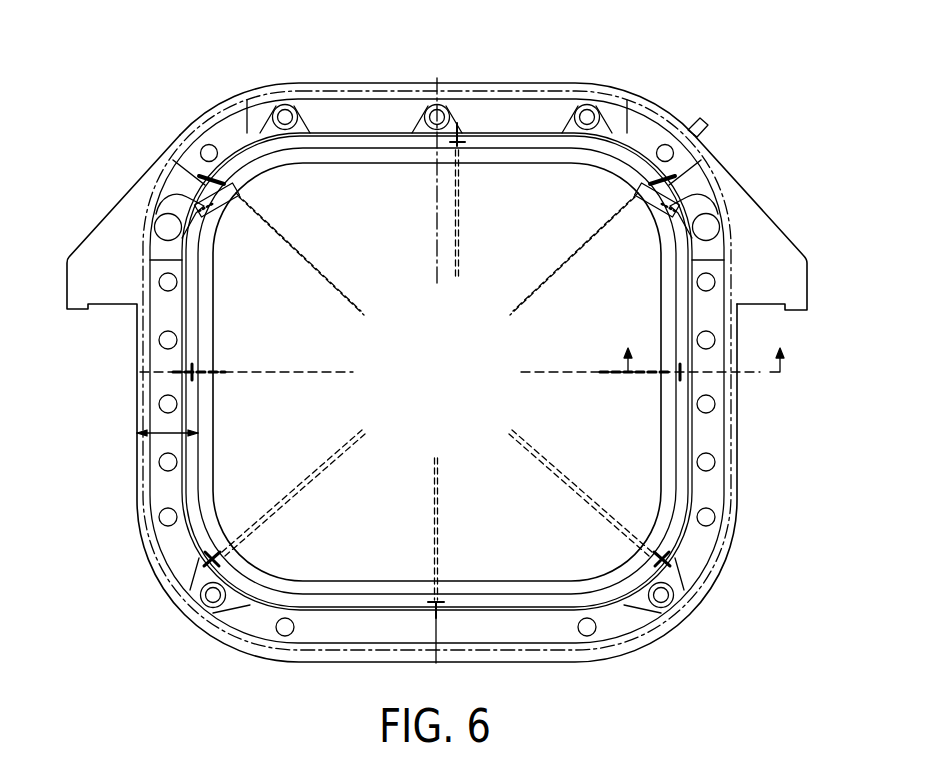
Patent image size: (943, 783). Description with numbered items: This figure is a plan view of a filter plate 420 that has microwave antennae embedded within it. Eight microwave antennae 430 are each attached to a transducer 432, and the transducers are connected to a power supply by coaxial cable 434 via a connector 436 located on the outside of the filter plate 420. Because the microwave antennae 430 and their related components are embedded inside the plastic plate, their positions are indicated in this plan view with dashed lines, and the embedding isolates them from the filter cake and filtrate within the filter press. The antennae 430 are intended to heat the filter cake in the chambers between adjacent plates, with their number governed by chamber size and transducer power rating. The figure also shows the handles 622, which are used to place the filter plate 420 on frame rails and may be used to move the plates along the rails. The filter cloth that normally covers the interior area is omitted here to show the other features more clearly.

The filter plate 420 is at (122, 139).
The microwave antenna 430 is at (468, 138).
The transducer 432 is at (461, 210).
The coaxial cable 434 is at (461, 108).
The connector 436 is at (690, 128).
The handle 622 is at (760, 223).